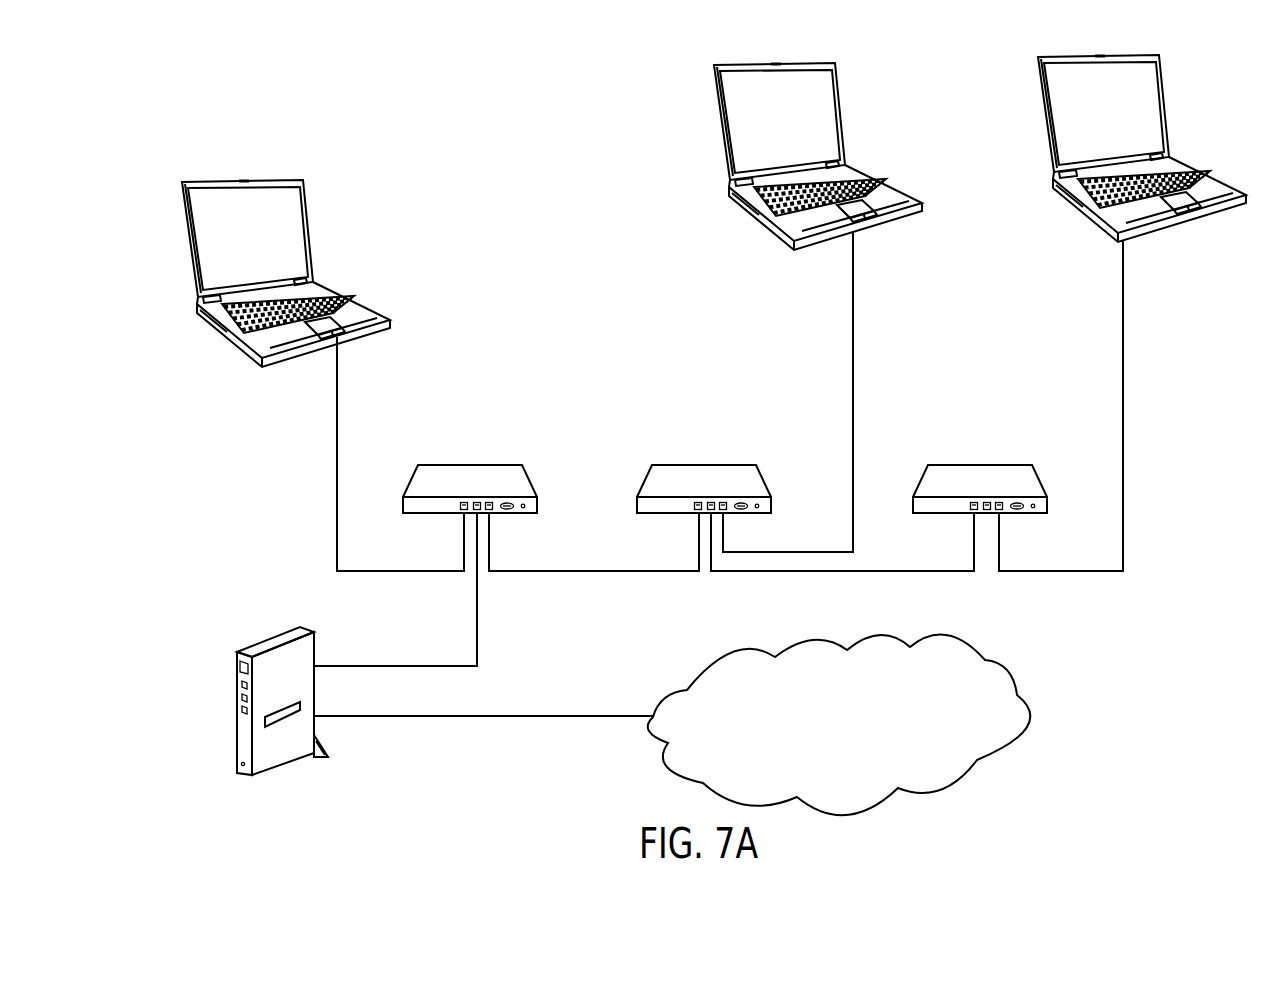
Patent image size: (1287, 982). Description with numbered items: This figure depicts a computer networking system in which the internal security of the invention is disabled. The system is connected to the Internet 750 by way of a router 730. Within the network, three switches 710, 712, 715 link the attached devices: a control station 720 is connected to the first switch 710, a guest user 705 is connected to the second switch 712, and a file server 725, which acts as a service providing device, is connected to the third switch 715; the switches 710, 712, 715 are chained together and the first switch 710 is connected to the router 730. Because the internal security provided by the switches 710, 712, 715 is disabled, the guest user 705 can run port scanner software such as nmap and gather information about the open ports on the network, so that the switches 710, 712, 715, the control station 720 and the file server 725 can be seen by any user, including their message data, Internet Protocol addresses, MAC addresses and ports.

The guest user 705 is at (847, 122).
The switch 710 is at (528, 480).
The switch 712 is at (763, 480).
The switch 715 is at (1038, 480).
The control station 720 is at (312, 243).
The file server 725 is at (1168, 122).
The router 730 is at (314, 652).
The Internet 750 is at (1017, 680).